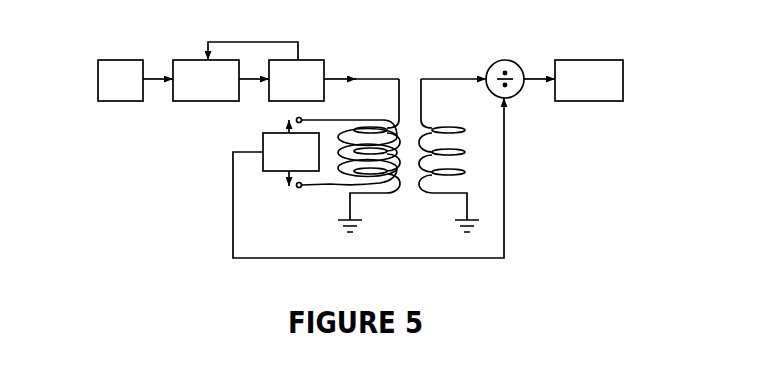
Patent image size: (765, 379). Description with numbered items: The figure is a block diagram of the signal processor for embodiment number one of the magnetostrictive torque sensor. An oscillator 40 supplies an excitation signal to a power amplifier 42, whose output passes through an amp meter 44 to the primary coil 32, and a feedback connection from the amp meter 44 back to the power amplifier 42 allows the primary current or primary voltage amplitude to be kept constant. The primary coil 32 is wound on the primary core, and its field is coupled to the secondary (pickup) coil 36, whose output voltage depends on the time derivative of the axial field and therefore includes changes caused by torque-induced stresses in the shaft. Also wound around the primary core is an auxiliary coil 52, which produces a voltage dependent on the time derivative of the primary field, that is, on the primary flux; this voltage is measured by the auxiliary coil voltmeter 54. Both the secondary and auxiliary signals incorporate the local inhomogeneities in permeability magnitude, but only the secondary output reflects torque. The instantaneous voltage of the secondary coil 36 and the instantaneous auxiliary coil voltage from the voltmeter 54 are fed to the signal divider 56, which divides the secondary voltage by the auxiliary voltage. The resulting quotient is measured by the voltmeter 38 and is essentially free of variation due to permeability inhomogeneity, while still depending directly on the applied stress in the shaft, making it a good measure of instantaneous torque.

The primary coil 32 is at (377, 193).
The secondary coil 36 is at (433, 193).
The voltmeter 38 is at (589, 65).
The oscillator 40 is at (120, 66).
The power amplifier 42 is at (203, 66).
The amp meter 44 is at (301, 66).
The auxiliary coil 52 is at (328, 188).
The auxiliary coil voltmeter 54 is at (282, 158).
The signal divider 56 is at (503, 64).